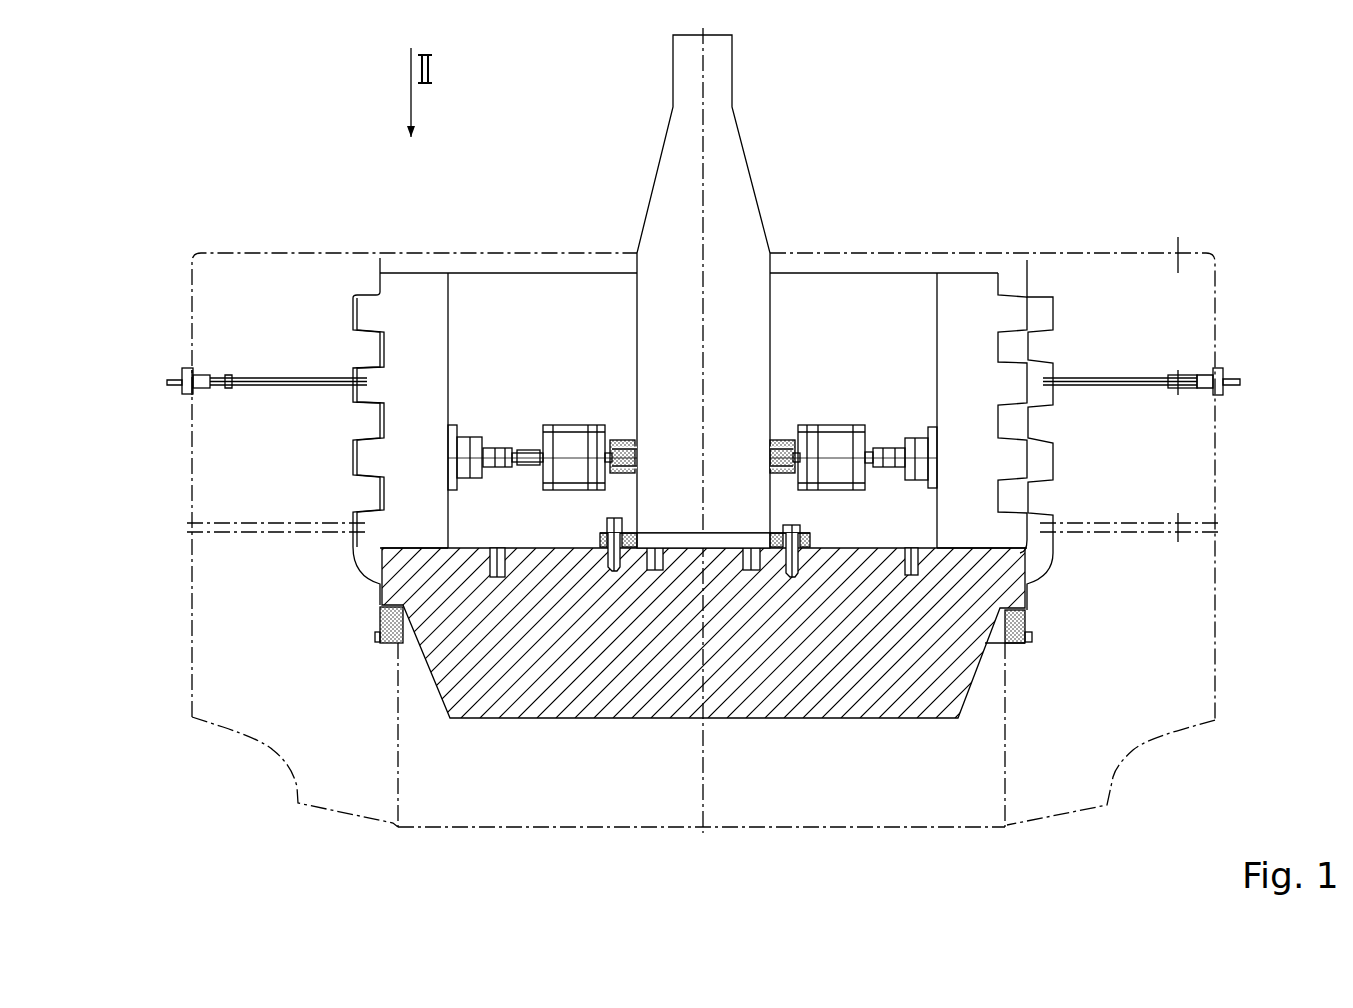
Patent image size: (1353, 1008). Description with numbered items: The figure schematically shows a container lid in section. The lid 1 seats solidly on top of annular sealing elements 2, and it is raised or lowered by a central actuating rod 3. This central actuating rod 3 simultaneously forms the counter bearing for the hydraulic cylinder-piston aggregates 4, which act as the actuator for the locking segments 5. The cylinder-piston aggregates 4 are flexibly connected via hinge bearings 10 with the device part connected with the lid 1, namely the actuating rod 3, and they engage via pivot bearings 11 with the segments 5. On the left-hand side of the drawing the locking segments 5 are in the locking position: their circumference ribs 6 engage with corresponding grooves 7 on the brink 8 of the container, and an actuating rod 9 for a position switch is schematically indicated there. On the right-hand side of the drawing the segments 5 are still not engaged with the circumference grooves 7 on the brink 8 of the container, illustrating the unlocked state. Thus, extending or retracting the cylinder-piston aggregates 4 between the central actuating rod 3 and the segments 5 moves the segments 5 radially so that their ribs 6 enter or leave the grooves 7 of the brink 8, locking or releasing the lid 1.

The lid 1 is at (925, 635).
The annular sealing elements 2 is at (1027, 650).
The central actuating rod 3 is at (737, 225).
The hydraulic cylinder-piston aggregates 4 is at (570, 457).
The locking segments 5 is at (428, 340).
The circumference ribs 6 is at (385, 305).
The circumference grooves 7 is at (348, 300).
The brink of the container 8 is at (246, 293).
The actuating rod for a position switch 9 is at (268, 380).
The hinge bearings 10 is at (617, 450).
The pivot bearings 11 is at (467, 440).